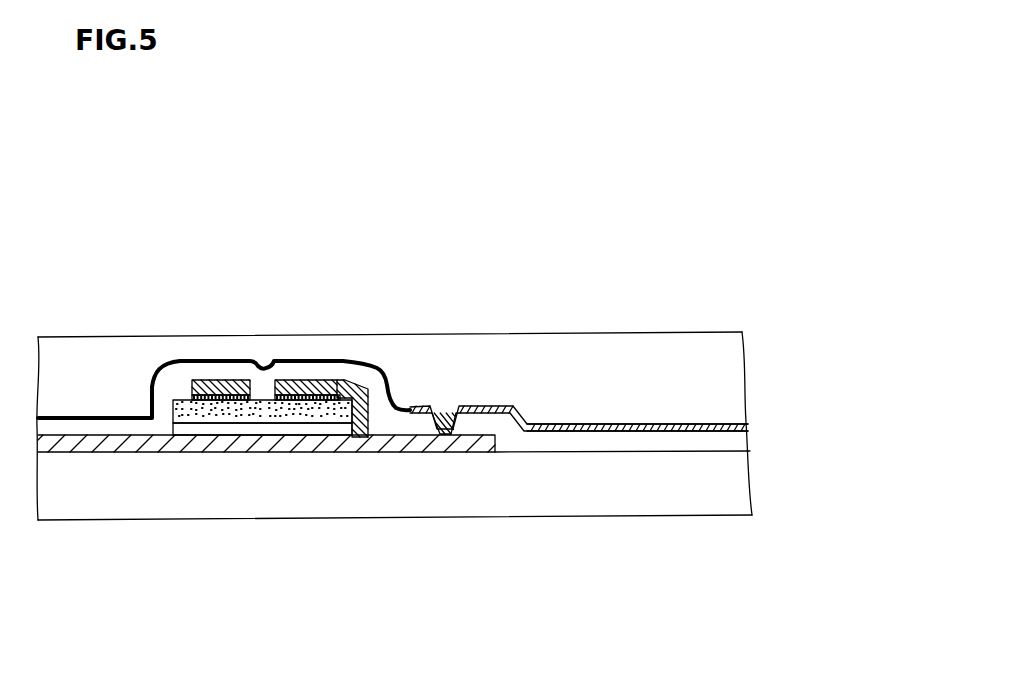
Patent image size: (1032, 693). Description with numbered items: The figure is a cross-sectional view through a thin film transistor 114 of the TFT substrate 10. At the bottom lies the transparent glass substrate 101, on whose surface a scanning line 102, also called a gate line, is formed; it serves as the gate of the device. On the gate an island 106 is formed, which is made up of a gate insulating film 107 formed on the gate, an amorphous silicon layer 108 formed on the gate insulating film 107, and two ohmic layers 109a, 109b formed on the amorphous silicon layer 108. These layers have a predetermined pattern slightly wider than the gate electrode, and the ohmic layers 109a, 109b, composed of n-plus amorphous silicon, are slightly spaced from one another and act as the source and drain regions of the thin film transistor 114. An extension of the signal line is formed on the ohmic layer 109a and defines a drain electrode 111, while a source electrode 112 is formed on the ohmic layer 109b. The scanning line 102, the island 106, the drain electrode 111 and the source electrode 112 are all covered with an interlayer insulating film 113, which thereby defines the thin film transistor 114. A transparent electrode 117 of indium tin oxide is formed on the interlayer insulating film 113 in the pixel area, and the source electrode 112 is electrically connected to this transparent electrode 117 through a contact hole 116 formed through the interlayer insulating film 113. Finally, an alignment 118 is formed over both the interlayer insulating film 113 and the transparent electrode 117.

The TFT substrate 10 is at (304, 387).
The transparent glass substrate 101 is at (599, 493).
The scanning line 102 is at (90, 450).
The island 106 is at (170, 403).
The gate insulating film 107 is at (317, 428).
The amorphous silicon layer 108 is at (222, 412).
The ohmic layer 109a is at (259, 395).
The ohmic layer 109b is at (298, 394).
The drain electrode 111 is at (218, 381).
The source electrode 112 is at (343, 373).
The interlayer insulating film 113 is at (108, 428).
The thin film transistor 114 is at (392, 380).
The contact hole 116 is at (453, 436).
The transparent electrode 117 is at (702, 433).
The alignment 118 is at (663, 348).